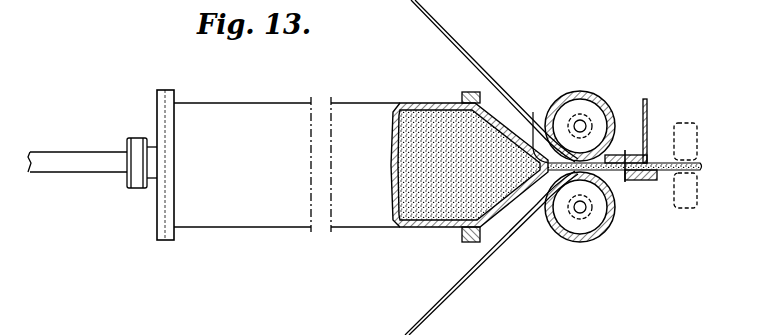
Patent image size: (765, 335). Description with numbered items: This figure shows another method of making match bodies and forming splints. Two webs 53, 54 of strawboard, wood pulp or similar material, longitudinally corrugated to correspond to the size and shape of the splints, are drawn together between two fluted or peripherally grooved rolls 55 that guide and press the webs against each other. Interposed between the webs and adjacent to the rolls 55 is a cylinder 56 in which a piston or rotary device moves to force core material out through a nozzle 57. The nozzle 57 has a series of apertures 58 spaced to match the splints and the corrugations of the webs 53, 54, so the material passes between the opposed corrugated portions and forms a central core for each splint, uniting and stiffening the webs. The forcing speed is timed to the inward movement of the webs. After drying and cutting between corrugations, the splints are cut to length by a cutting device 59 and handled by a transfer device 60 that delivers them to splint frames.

The web 53 is at (471, 63).
The web 54 is at (453, 290).
The fluted rolls 55 is at (575, 92).
The cylinder 56 is at (369, 218).
The nozzle 57 is at (497, 215).
The apertures 58 is at (533, 127).
The cutting device 59 is at (647, 120).
The transfer device 60 is at (698, 152).